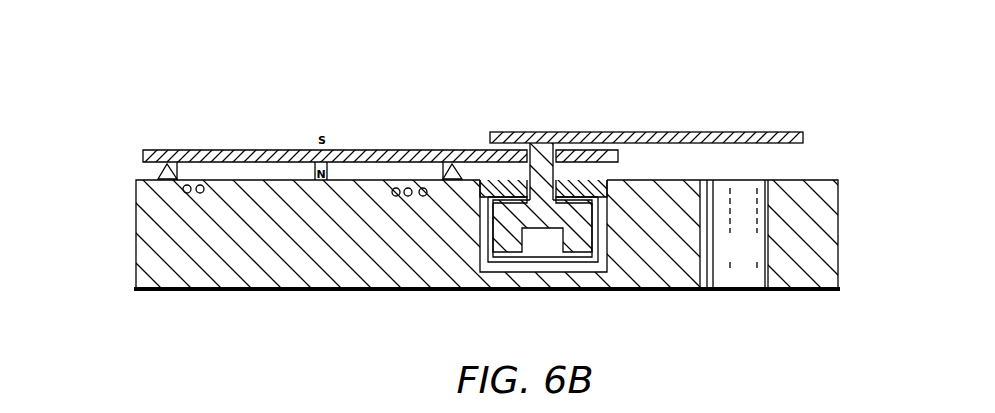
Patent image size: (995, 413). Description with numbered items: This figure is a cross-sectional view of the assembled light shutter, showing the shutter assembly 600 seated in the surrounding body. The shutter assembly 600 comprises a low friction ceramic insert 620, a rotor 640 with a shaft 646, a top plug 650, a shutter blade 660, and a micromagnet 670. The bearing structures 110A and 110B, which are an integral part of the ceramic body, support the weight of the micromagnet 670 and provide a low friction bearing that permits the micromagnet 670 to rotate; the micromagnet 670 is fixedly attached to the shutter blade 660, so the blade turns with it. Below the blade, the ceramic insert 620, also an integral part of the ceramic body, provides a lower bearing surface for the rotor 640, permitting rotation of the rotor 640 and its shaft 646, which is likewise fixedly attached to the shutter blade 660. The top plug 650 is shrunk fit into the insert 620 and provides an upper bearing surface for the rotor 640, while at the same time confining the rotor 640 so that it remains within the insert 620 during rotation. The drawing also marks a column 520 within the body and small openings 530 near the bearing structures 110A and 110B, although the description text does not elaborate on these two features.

The bearing structure 110A is at (162, 169).
The bearing structure 110B is at (450, 172).
The spacer column 520 is at (745, 190).
The holes 530 is at (187, 190).
The shutter assembly 600 is at (602, 179).
The low friction ceramic insert 620 is at (585, 265).
The rotor 640 is at (502, 232).
The shaft 646 is at (542, 158).
The top plug 650 is at (597, 180).
The shutter blade 660 is at (787, 133).
The micromagnet 670 is at (287, 153).